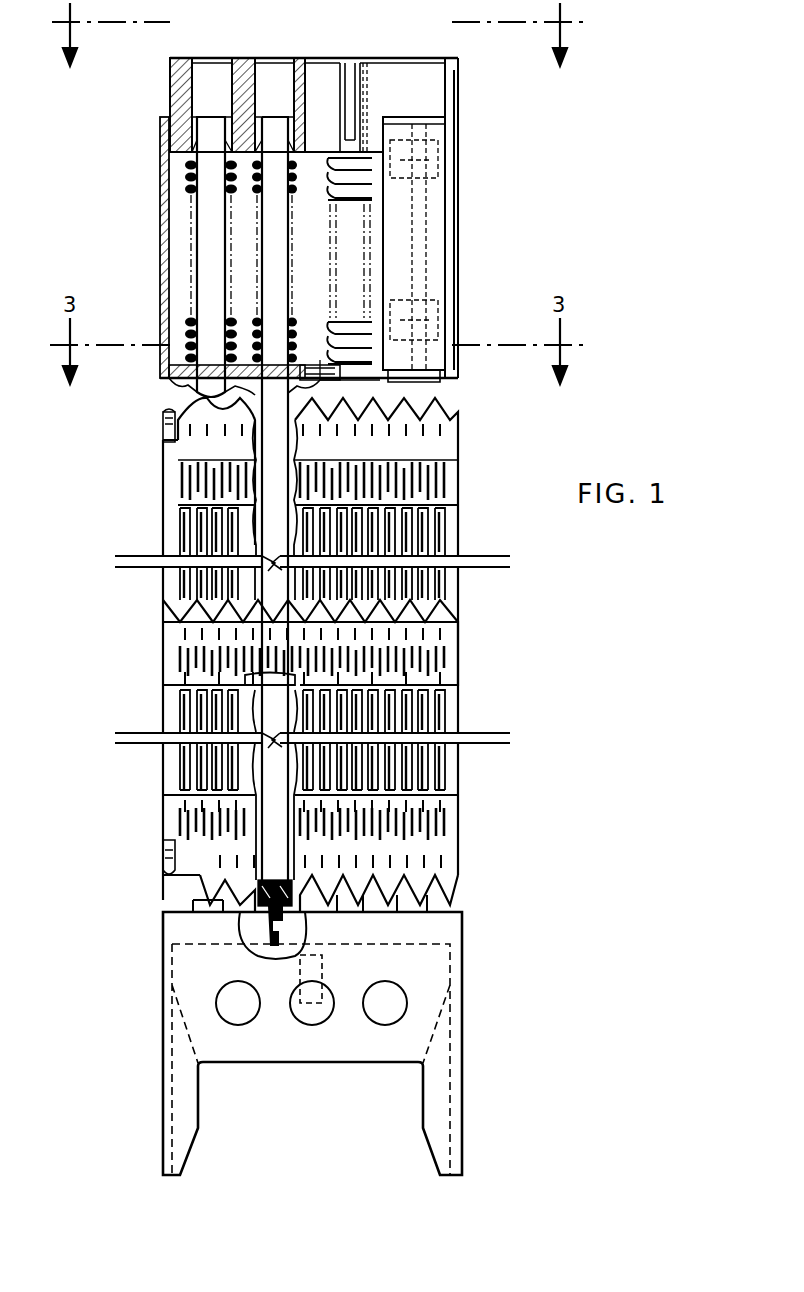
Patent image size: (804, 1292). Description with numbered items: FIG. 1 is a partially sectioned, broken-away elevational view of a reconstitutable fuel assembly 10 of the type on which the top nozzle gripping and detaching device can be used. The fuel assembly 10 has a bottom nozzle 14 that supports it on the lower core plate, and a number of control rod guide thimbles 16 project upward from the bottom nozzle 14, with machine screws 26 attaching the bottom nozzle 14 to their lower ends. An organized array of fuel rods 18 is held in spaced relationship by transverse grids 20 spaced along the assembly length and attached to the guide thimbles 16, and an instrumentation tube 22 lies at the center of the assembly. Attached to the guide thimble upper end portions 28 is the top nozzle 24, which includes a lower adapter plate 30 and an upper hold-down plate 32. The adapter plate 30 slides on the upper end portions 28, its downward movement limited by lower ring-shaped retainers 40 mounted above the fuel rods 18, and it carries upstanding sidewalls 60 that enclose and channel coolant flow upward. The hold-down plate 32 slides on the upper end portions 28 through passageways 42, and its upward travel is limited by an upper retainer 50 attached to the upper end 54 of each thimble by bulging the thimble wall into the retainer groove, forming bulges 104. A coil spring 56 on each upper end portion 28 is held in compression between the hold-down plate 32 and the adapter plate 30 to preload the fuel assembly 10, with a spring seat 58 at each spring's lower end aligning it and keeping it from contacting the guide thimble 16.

The reconstitutable fuel assembly 10 is at (566, 243).
The bottom nozzle 14 is at (462, 992).
The control rod guide thimbles 16 is at (265, 470).
The fuel rods 18 is at (460, 532).
The transverse grids 20 is at (460, 445).
The instrumentation tube 22 is at (315, 1003).
The top nozzle 24 is at (463, 252).
The machine screws 26 is at (262, 932).
The guide thimble upper end portions 28 is at (192, 256).
The lower adapter plate 30 is at (185, 385).
The upper hold-down plate 32 is at (170, 92).
The lower ring-shaped retainers 40 is at (188, 402).
The passageways 42 is at (204, 78).
The upper retainer 50 is at (170, 108).
The upper end of guide thimble 54 is at (264, 112).
The coil spring 56 is at (187, 178).
The spring seat 58 is at (178, 356).
The upstanding sidewalls 60 is at (163, 222).
The bulges 104 is at (284, 112).